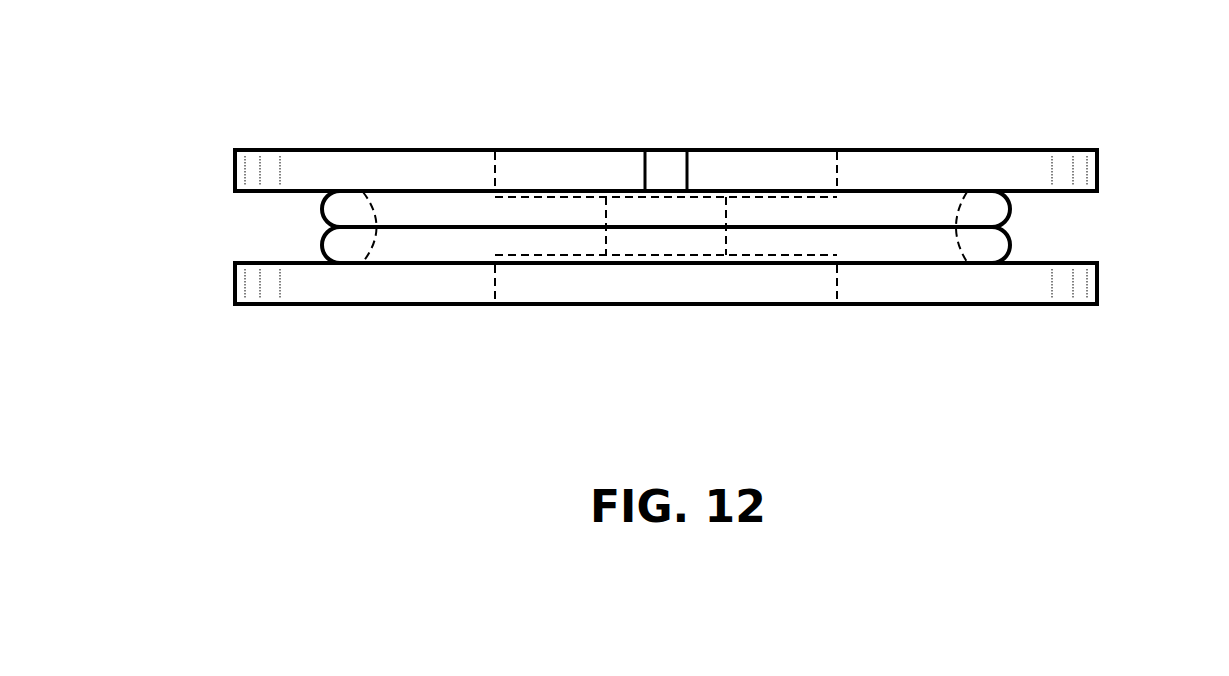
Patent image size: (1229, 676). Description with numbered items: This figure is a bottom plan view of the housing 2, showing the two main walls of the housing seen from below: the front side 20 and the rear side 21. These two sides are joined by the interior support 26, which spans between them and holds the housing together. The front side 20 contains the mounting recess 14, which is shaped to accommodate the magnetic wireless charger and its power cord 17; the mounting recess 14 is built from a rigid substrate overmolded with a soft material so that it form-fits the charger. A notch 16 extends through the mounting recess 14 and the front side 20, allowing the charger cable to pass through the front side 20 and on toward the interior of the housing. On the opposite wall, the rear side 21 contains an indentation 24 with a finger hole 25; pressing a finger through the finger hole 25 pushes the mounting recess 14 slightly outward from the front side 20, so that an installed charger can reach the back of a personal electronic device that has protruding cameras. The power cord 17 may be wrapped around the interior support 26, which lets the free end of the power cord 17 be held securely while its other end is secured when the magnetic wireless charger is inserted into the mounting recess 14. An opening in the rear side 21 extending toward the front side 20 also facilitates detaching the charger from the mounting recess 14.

The housing 2 is at (1118, 160).
The mounting recess 14 is at (535, 158).
The notch 16 is at (657, 150).
The power cord 17 is at (335, 212).
The front side 20 is at (296, 150).
The rear side 21 is at (313, 293).
The indentation 24 is at (527, 290).
The finger hole 25 is at (722, 157).
The interior support 26 is at (924, 243).